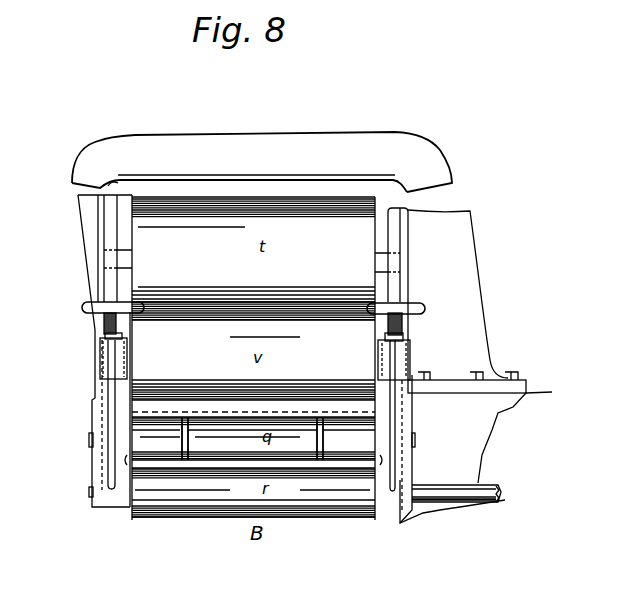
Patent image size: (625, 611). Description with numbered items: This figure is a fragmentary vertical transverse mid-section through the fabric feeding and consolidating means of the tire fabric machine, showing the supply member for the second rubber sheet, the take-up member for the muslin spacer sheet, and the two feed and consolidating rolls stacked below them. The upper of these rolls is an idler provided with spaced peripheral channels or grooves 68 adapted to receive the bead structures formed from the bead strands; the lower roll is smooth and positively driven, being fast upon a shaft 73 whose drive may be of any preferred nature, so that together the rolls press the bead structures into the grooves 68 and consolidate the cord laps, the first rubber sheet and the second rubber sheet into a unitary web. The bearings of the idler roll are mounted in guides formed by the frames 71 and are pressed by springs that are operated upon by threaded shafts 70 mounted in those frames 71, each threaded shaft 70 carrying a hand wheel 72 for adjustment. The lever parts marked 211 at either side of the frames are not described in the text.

The hand wheels 72 is at (88, 306).
The threaded shafts 70 is at (103, 324).
The frames 71 is at (100, 360).
The lever arm 211 is at (103, 497).
The peripheral channels or grooves 68 is at (188, 438).
The shaft 73 is at (444, 492).